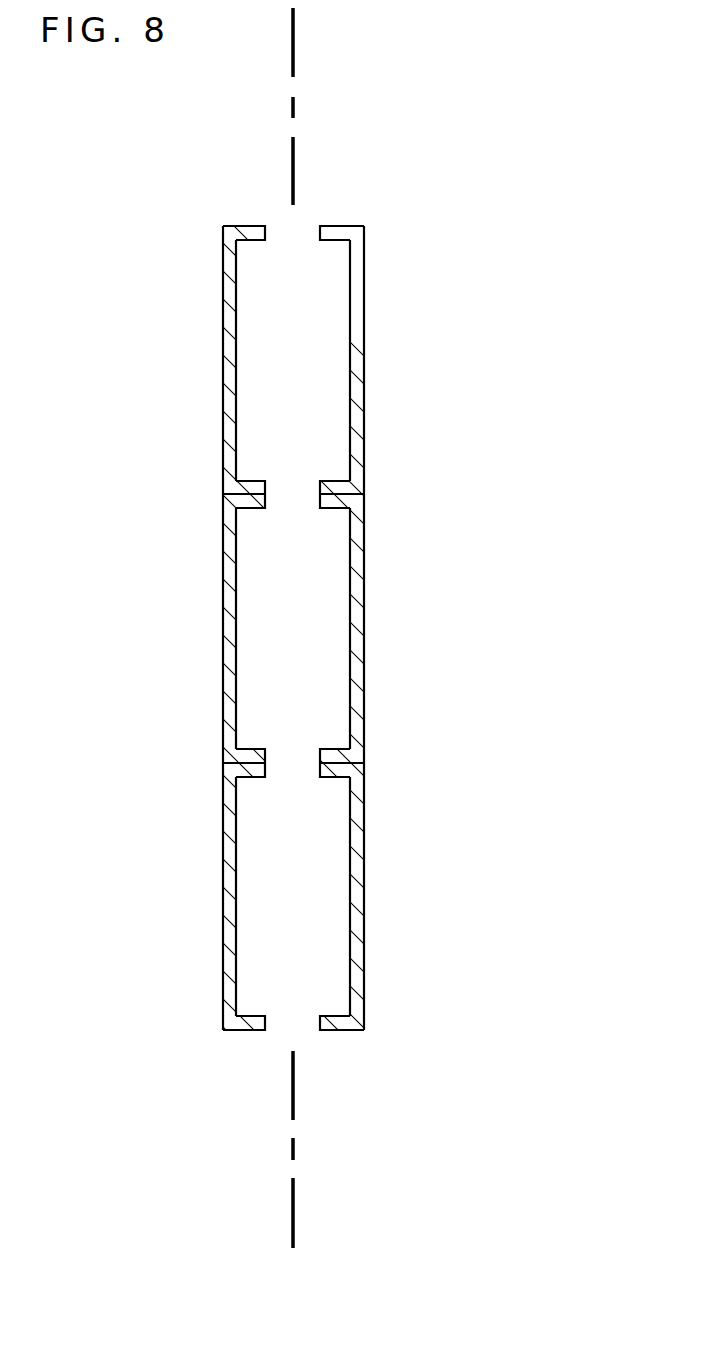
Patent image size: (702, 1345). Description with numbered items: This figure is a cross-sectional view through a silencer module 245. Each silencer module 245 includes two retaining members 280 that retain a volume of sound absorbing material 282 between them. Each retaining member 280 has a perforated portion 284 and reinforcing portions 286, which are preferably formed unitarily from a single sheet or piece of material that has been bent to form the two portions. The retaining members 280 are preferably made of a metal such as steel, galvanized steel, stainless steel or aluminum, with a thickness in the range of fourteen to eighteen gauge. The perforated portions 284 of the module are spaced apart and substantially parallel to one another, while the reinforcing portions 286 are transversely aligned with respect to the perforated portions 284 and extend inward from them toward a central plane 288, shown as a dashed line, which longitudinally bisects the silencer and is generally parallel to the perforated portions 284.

The silencer module 245 is at (433, 380).
The retaining member 280 is at (351, 745).
The sound absorbing material 282 is at (303, 870).
The perforated portion 284 is at (362, 925).
The reinforcing portion 286 is at (340, 1030).
The central plane 288 is at (293, 77).